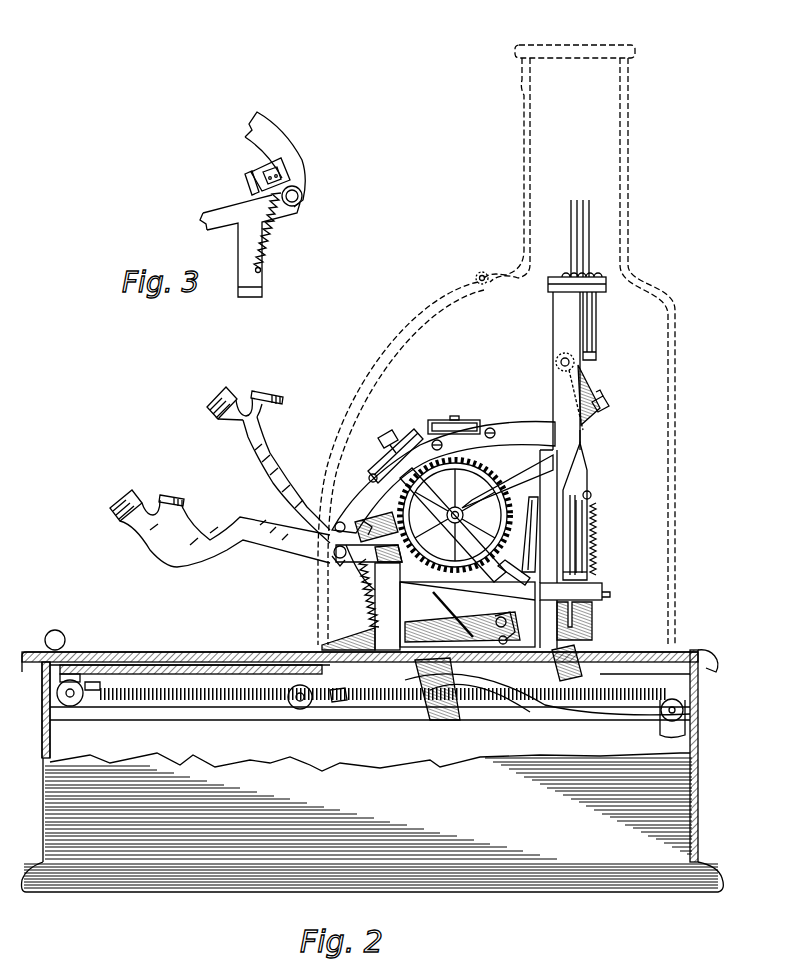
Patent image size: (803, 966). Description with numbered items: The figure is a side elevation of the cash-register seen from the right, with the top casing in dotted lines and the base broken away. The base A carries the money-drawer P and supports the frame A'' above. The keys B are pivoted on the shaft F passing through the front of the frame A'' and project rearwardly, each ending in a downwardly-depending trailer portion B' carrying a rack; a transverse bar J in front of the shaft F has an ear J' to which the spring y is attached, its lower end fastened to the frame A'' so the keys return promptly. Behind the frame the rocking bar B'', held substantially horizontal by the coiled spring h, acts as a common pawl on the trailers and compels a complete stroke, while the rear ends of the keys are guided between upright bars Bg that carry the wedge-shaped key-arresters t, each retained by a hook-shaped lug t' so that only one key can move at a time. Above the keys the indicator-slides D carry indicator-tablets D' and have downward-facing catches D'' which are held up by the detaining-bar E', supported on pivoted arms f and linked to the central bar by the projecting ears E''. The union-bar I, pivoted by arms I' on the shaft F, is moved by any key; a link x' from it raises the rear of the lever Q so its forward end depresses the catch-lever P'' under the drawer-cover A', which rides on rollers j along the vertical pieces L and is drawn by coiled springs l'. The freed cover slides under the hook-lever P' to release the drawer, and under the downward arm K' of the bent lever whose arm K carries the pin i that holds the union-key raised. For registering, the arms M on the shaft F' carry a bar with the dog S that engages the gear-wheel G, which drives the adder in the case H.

In FIG. 2, the base A is at (373, 761).
In FIG. 2, the drawer-cover A' is at (191, 652).
In FIG. 2, the frame A'' is at (443, 525).
In FIG. 2, the keys B is at (220, 478).
In FIG. 2, the trailer portion B' is at (574, 663).
In FIG. 2, the pawl bar B'' is at (586, 594).
In FIG. 2, the upright bars Bg is at (579, 540).
In FIG. 2, the indicator-slides D is at (575, 430).
In FIG. 2, the indicator-tablets D' is at (586, 238).
In FIG. 2, the catch D'' is at (587, 505).
In FIG. 2, the detaining-bar E' is at (602, 415).
In FIG. 2, the projecting ears E'' is at (610, 400).
In FIG. 2, the shaft F is at (321, 571).
In FIG. 2, the shaft F' is at (431, 535).
In FIG. 2, the gear-wheel G is at (498, 483).
In FIG. 2, the adder case H is at (454, 416).
In FIG. 2, the tilted plate H' is at (387, 456).
In FIG. 2, the union-bar I is at (376, 527).
In FIG. 2, the arms I' is at (368, 553).
In FIG. 2, the transverse bar J is at (370, 522).
In FIG. 3, the transverse bar J is at (243, 178).
In FIG. 3, the ear J' is at (275, 159).
In FIG. 2, the lever arm K is at (467, 614).
In FIG. 2, the lever arm K' is at (437, 697).
In FIG. 2, the vertical pieces L is at (138, 708).
In FIG. 2, the arms M is at (530, 508).
In FIG. 2, the money-drawer P is at (482, 751).
In FIG. 2, the hook-lever P' is at (547, 703).
In FIG. 2, the catch-lever P'' is at (218, 704).
In FIG. 2, the lever Q is at (345, 636).
In FIG. 2, the dog S is at (514, 571).
In FIG. 2, the arms f is at (578, 391).
In FIG. 2, the coiled spring h is at (597, 558).
In FIG. 2, the pin i is at (510, 628).
In FIG. 2, the rollers j is at (72, 706).
In FIG. 2, the coiled springs l' is at (645, 669).
In FIG. 2, the key-arrester t is at (573, 624).
In FIG. 2, the hook-shaped lug t' is at (593, 574).
In FIG. 2, the link x' is at (445, 614).
In FIG. 2, the spring y is at (362, 586).
In FIG. 3, the spring y is at (268, 234).